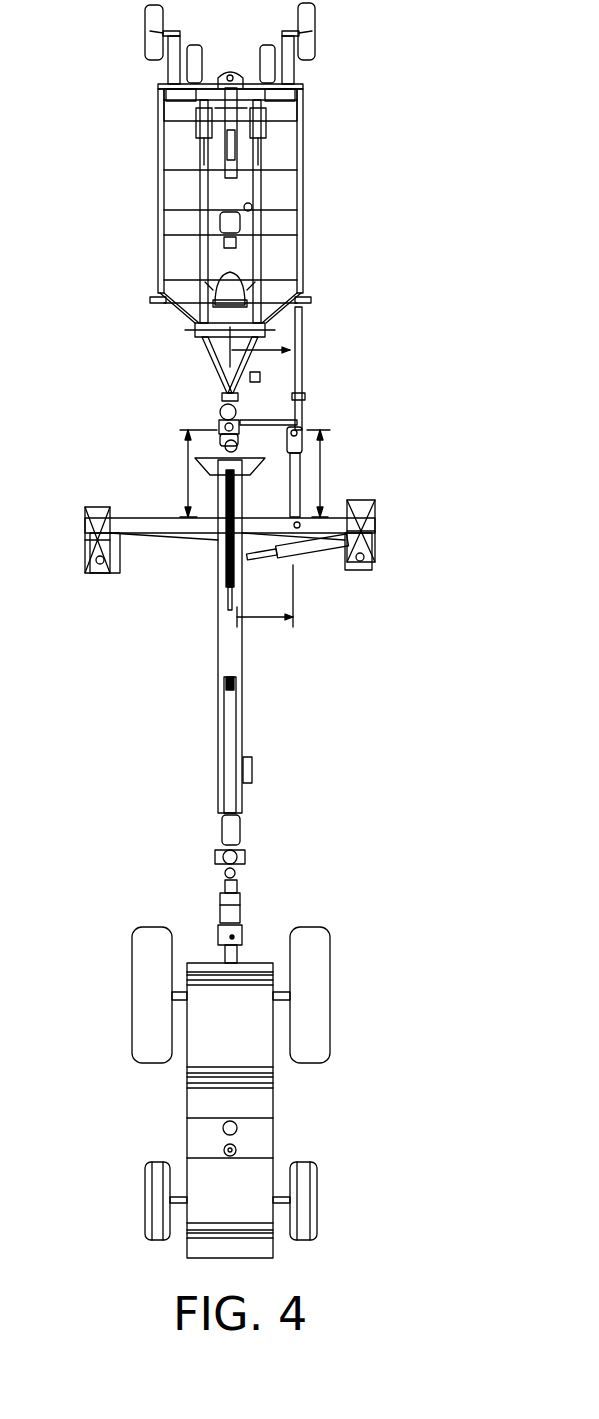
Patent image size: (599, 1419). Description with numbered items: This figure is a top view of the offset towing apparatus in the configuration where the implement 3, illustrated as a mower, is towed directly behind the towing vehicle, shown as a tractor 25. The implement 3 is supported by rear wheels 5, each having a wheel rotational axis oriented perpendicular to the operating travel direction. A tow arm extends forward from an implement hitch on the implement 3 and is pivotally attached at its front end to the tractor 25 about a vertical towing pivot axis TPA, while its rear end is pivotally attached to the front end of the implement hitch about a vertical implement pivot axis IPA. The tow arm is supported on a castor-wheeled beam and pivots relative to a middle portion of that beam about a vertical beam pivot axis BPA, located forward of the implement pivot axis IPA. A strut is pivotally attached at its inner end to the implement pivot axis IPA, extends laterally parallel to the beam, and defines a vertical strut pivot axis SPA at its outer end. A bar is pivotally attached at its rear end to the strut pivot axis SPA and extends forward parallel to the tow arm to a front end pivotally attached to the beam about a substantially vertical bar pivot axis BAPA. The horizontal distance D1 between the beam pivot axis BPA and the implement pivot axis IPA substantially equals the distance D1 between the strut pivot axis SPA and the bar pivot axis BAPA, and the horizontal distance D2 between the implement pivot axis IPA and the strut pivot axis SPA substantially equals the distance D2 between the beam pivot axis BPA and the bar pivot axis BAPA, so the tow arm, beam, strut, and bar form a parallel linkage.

The implement 3 is at (305, 172).
The rear wheels 5 is at (318, 30).
The tractor 25 is at (275, 1135).
The horizontal distance D1 is at (188, 470).
The horizontal distance D2 is at (280, 350).
The implement pivot axis IPA is at (220, 428).
The strut pivot axis SPA is at (298, 420).
The beam pivot axis BPA is at (213, 547).
The bar pivot axis BAPA is at (293, 525).
The towing pivot axis TPA is at (232, 937).